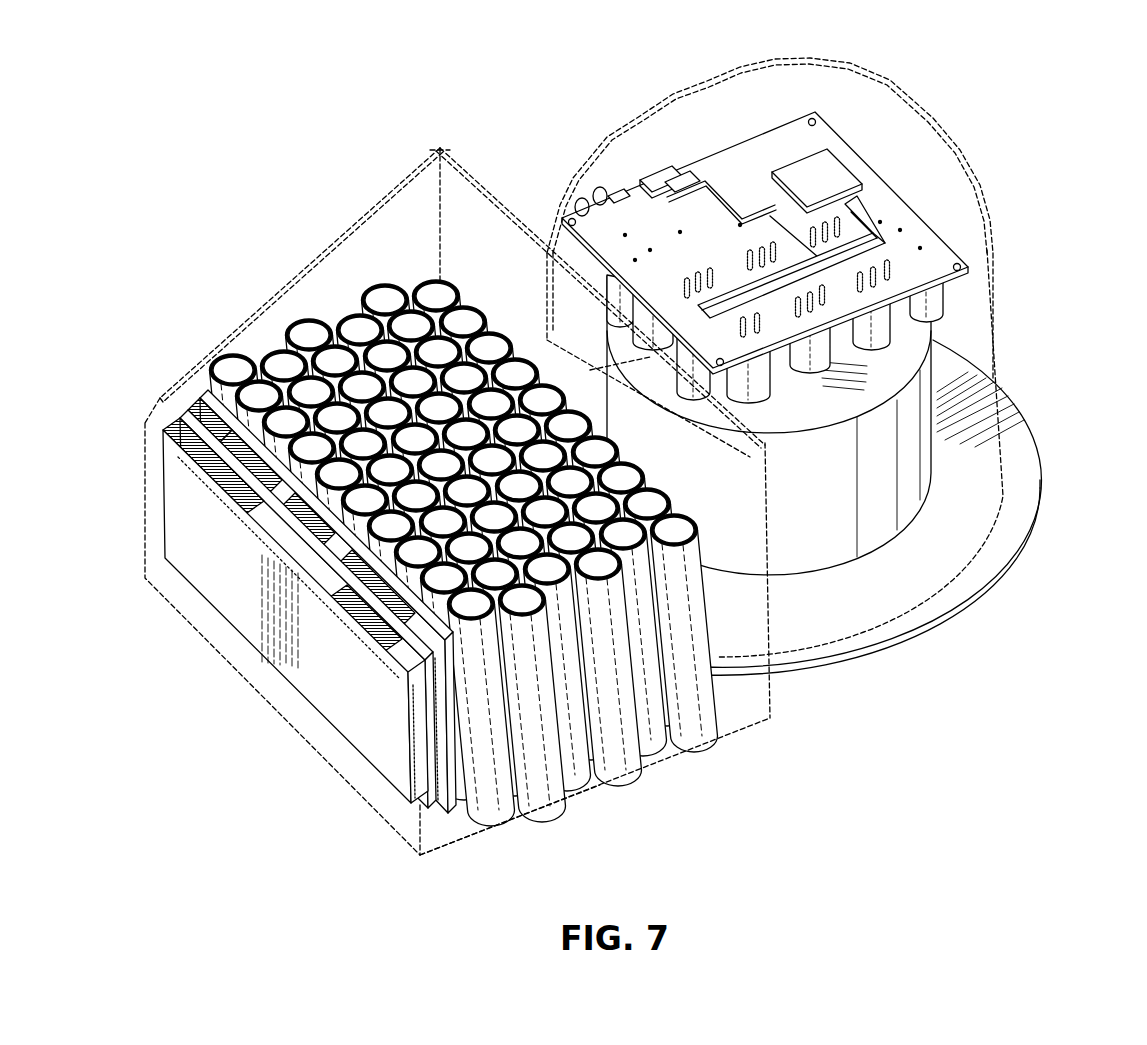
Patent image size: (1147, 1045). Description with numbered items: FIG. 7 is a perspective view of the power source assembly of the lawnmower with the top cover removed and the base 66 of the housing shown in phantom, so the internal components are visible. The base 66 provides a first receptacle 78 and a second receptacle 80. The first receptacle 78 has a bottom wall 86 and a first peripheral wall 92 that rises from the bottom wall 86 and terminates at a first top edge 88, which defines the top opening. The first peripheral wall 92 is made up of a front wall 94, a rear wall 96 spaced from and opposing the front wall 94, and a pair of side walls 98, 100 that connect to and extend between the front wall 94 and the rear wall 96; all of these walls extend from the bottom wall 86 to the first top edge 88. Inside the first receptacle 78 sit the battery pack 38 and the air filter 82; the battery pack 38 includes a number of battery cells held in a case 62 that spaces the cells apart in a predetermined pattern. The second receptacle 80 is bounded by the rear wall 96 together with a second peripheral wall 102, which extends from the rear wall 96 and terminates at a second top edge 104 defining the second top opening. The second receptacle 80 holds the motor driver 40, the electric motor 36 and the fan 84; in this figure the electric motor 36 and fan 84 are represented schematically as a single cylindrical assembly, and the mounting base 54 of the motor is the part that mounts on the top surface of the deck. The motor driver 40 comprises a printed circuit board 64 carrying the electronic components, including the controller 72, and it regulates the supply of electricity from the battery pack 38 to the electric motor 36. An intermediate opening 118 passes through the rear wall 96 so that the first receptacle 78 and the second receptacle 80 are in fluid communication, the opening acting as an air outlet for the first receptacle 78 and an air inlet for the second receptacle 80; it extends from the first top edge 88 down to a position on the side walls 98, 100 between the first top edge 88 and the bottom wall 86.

The electric motor 36 is at (856, 423).
The battery pack 38 is at (313, 288).
The motor driver 40 is at (912, 172).
The mounting base 54 is at (1023, 422).
The case 62 is at (210, 358).
The printed circuit board 64 is at (755, 218).
The base 66 is at (780, 730).
The controller 72 is at (823, 173).
The first receptacle 78 is at (418, 145).
The second receptacle 80 is at (1012, 477).
The air filter 82 is at (211, 580).
The fan 84 is at (945, 386).
The bottom wall 86 is at (493, 838).
The first top edge 88 is at (475, 165).
The first peripheral wall 92 is at (490, 501).
The front wall 94 is at (268, 673).
The rear wall 96 is at (462, 223).
The side wall 98 is at (695, 742).
The side wall 100 is at (395, 252).
The second peripheral wall 102 is at (1000, 262).
The second top edge 104 is at (817, 203).
The intermediate opening 118 is at (662, 432).